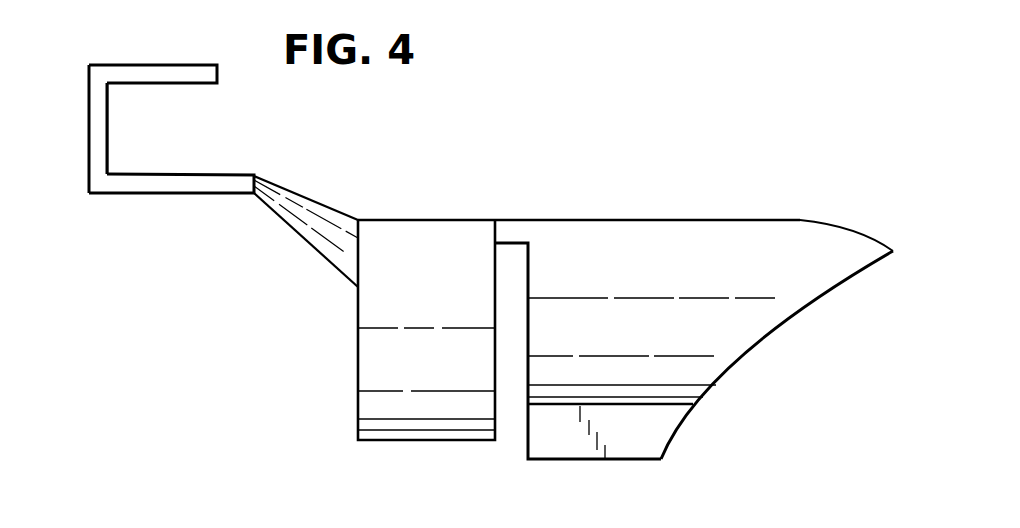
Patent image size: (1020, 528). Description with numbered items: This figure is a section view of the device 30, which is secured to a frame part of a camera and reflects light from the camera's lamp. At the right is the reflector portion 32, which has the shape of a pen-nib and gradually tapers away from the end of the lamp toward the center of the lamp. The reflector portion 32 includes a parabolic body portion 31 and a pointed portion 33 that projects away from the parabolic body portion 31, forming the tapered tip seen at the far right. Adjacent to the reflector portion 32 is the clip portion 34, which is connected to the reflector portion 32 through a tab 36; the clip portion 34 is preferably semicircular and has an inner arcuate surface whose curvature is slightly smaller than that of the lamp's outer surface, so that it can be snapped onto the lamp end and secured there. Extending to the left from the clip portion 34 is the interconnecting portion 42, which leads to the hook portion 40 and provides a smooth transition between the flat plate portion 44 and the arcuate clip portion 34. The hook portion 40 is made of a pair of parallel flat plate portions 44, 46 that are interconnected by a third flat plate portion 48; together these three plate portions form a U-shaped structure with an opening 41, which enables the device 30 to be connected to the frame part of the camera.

The device 30 is at (604, 133).
The parabolic body portion 31 is at (613, 247).
The reflector portion 32 is at (739, 207).
The pointed portion 33 is at (848, 247).
The clip portion 34 is at (430, 206).
The tab 36 is at (518, 207).
The hook portion 40 is at (111, 52).
The opening 41 is at (187, 132).
The interconnecting portion 42 is at (314, 193).
The flat plate portion 44 is at (178, 72).
The flat plate portion 46 is at (177, 183).
The flat plate portion 48 is at (95, 162).